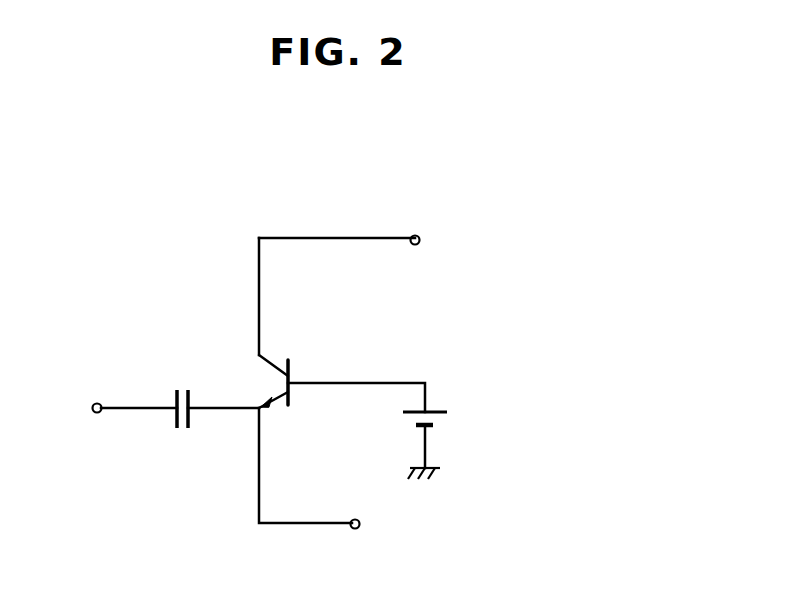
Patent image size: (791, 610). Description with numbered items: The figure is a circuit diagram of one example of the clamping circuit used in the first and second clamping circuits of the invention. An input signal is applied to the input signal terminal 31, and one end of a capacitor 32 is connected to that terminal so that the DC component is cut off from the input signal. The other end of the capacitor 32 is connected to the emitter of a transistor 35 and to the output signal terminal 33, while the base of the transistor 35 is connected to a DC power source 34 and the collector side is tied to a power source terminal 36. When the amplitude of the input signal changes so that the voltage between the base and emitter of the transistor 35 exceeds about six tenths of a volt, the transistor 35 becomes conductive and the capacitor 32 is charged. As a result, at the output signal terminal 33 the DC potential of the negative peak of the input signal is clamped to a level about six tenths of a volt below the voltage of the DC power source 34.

The input signal terminal 31 is at (96, 403).
The capacitor 32 is at (185, 430).
The output signal terminal 33 is at (358, 529).
The DC power source 34 is at (440, 420).
The transistor 35 is at (292, 372).
The power source terminal 36 is at (420, 237).